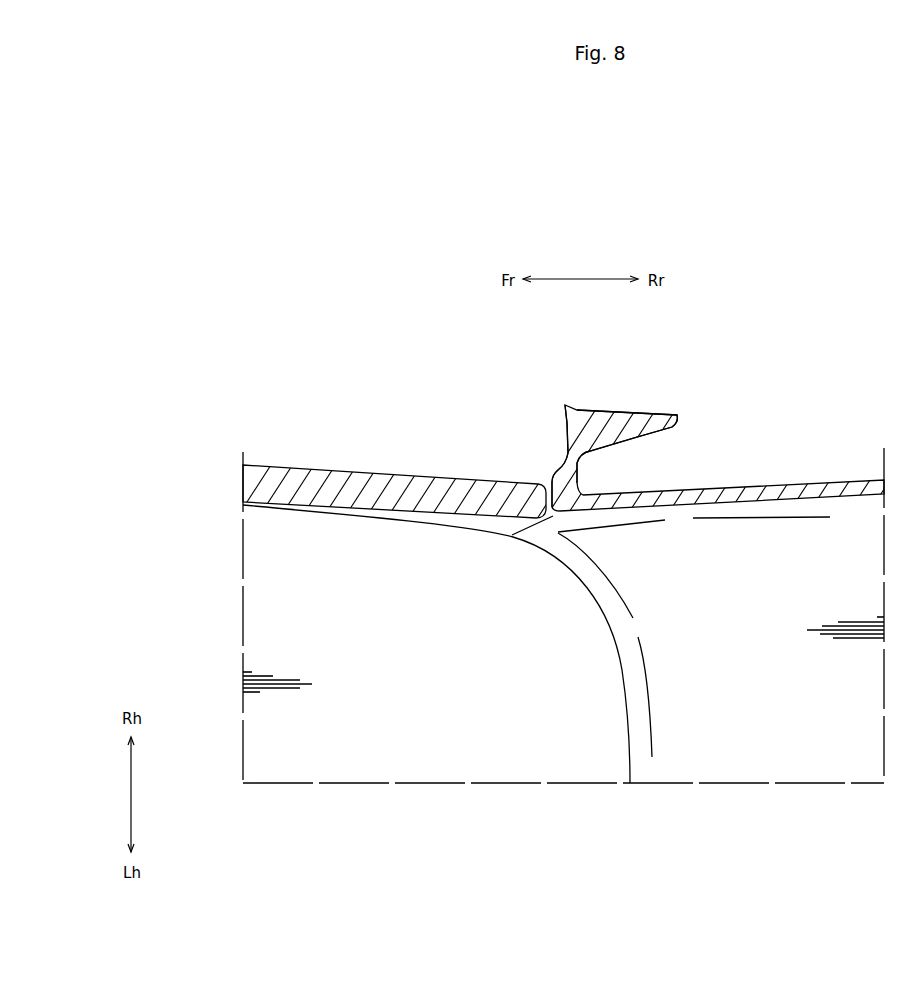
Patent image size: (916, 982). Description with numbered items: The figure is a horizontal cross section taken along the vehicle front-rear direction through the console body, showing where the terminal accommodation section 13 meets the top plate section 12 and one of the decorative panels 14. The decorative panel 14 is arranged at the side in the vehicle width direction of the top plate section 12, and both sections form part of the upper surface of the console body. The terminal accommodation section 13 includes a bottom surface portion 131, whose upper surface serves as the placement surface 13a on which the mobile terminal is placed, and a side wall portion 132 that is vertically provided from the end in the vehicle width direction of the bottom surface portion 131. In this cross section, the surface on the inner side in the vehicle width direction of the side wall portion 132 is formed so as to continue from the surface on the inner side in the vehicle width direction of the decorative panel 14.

The top plate section 12 is at (293, 620).
The terminal accommodation section 13 is at (802, 482).
The placement surface 13a is at (703, 677).
The decorative panel 14 is at (349, 487).
The bottom surface portion 131 is at (792, 730).
The side wall portion 132 is at (722, 485).